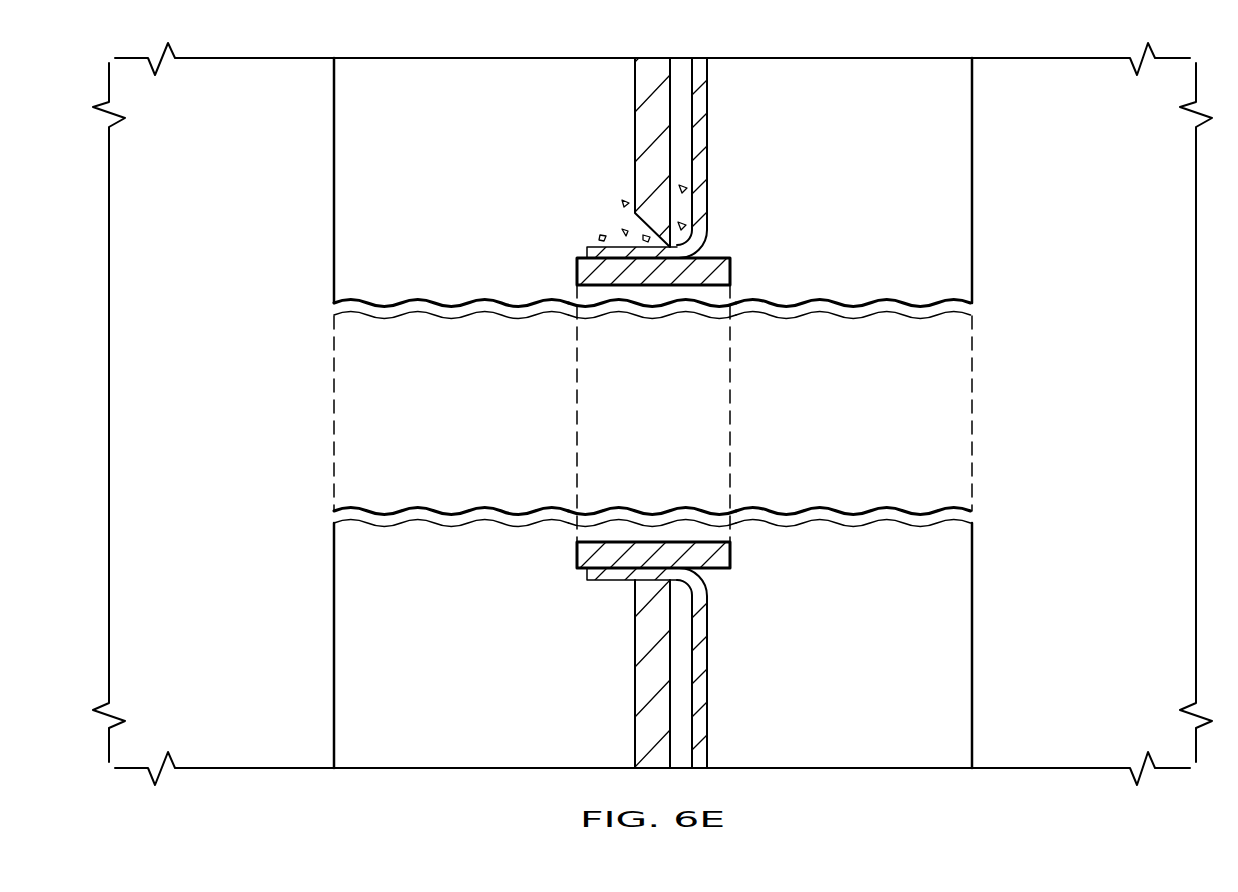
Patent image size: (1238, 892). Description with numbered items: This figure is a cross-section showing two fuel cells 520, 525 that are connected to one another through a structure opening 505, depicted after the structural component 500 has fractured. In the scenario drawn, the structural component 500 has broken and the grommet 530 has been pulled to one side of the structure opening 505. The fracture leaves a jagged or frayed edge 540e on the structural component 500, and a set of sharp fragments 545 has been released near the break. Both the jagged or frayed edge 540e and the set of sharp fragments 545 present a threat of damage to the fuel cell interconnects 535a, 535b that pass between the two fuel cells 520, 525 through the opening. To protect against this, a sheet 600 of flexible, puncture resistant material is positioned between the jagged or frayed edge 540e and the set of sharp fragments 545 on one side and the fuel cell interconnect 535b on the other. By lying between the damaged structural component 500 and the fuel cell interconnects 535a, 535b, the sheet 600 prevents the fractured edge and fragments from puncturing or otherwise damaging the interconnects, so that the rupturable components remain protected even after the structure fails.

The structural component 500 is at (635, 132).
The sheet 600 is at (707, 143).
The jagged or frayed edge 540e is at (637, 222).
The structure opening 505 is at (720, 238).
The grommet 530 is at (723, 571).
The set of sharp fragments 545 is at (576, 241).
The fuel cell 520 is at (242, 429).
The fuel cell 525 is at (1104, 429).
The fuel cell interconnect 535a is at (483, 527).
The fuel cell interconnect 535b is at (820, 527).